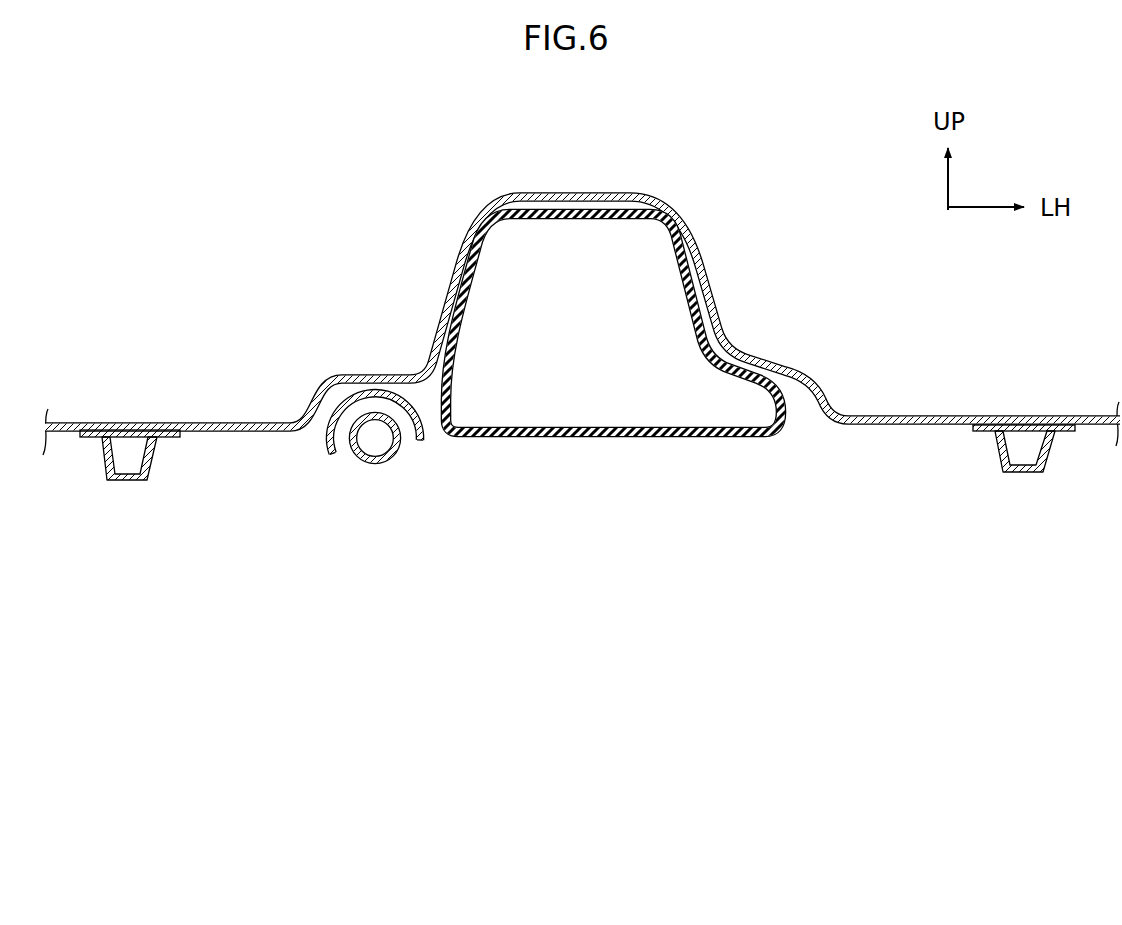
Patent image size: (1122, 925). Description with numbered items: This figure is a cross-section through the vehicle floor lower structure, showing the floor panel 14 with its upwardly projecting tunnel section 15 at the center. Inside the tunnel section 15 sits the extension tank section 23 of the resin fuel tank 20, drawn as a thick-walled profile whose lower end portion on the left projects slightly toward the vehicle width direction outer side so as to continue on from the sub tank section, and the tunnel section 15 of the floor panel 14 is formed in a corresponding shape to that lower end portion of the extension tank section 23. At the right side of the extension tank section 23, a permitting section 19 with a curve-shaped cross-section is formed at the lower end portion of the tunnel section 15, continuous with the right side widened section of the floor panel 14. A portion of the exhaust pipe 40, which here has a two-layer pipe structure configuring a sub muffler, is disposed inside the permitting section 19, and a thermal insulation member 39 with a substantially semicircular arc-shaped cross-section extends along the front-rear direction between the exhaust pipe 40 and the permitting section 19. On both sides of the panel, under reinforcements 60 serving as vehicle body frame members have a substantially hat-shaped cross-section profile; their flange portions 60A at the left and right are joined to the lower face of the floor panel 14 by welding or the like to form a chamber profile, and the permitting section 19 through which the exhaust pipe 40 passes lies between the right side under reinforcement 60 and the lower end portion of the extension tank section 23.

The floor panel 14 is at (878, 416).
The tunnel section 15 is at (608, 192).
The permitting section 19 is at (322, 416).
The fuel tank 20 is at (592, 439).
The extension tank section 23 is at (573, 218).
The thermal insulation member 39 is at (427, 443).
The exhaust pipe 40 is at (384, 464).
The under reinforcement 60 is at (120, 483).
The flange portion 60A is at (92, 440).